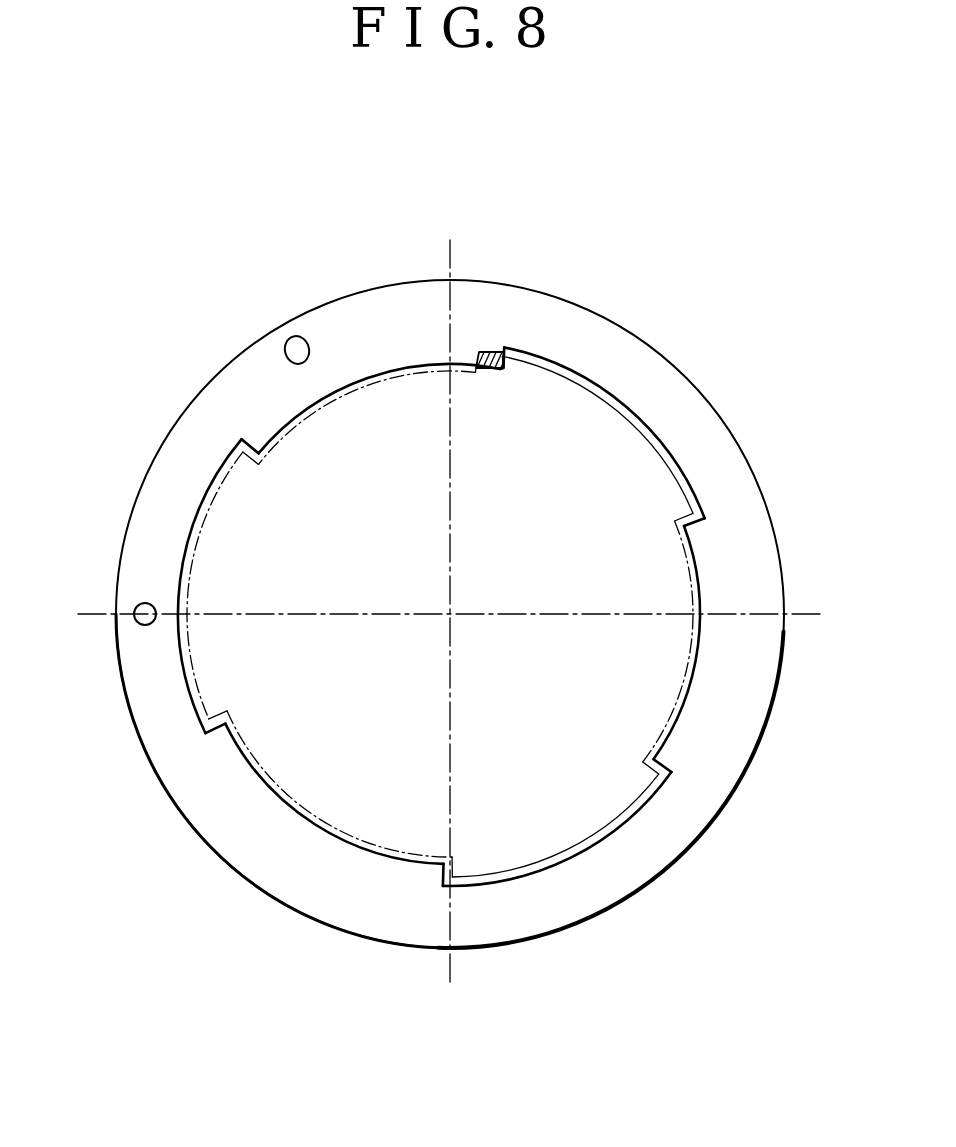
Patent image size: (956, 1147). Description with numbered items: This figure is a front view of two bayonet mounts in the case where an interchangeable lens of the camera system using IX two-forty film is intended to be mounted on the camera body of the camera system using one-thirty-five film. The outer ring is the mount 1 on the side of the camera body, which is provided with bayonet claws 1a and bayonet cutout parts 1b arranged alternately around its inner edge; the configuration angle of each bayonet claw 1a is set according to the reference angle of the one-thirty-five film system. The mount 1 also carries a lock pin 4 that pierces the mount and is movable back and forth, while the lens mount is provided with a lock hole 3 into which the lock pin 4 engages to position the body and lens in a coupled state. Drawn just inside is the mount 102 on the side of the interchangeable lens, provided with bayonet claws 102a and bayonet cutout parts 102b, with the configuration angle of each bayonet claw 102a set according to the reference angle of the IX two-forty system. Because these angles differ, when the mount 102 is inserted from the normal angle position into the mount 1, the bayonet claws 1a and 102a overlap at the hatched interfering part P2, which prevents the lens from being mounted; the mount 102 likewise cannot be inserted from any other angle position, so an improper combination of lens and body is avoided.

The mount 1 is at (590, 343).
The bayonet claws 1a is at (368, 377).
The bayonet cutout parts 1b is at (668, 448).
The lock hole 3 is at (290, 336).
The lock pin 4 is at (133, 610).
The mount 102 is at (290, 455).
The bayonet claws 102a is at (680, 485).
The bayonet cutout parts 102b is at (420, 372).
The interfering part P2 is at (492, 352).